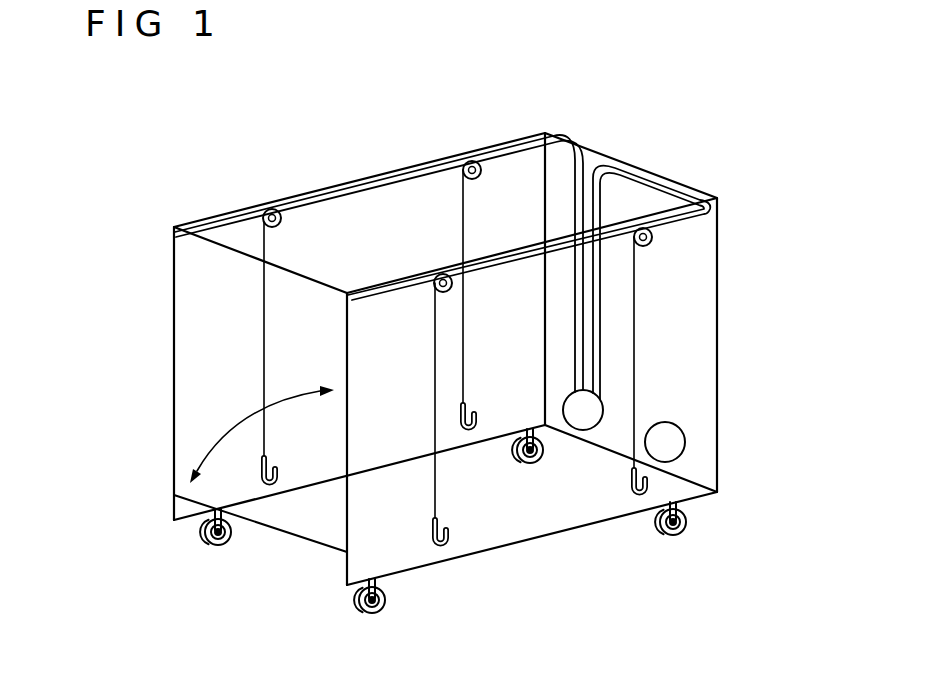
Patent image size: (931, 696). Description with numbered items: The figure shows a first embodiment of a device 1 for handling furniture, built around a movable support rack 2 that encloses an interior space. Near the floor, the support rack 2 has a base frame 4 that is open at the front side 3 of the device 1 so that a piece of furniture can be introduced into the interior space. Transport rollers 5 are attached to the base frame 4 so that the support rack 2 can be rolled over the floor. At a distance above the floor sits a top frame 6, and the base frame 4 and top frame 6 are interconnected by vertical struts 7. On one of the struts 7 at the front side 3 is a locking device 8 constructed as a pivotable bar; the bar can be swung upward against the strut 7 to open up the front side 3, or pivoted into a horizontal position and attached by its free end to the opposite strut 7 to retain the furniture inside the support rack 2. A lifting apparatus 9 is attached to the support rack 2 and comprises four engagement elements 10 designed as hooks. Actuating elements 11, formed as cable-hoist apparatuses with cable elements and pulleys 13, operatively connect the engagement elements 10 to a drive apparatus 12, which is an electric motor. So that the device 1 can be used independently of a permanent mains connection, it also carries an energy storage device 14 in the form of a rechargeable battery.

The device 1 is at (228, 142).
The support rack 2 is at (748, 173).
The front side 3 is at (150, 402).
The base frame 4 is at (703, 482).
The transport rollers 5 is at (214, 543).
The top frame 6 is at (200, 233).
The vertical struts 7 is at (172, 302).
The locking device 8 is at (258, 522).
The lifting apparatus 9 is at (676, 129).
The engagement elements 10 is at (258, 470).
The actuating elements 11 is at (437, 272).
The drive apparatus 12 is at (603, 410).
The pulleys 13 is at (276, 210).
The energy storage device 14 is at (685, 442).